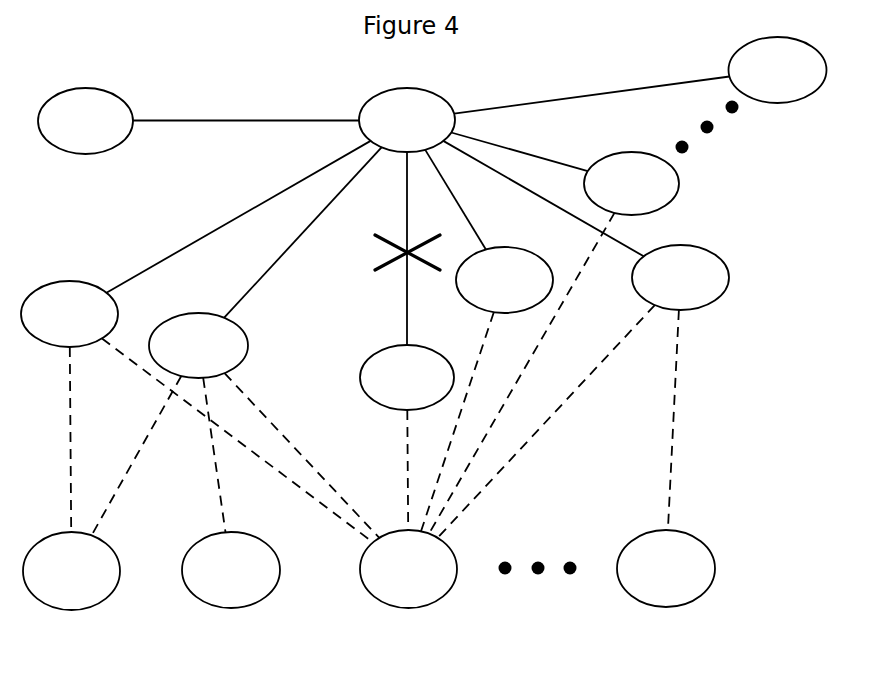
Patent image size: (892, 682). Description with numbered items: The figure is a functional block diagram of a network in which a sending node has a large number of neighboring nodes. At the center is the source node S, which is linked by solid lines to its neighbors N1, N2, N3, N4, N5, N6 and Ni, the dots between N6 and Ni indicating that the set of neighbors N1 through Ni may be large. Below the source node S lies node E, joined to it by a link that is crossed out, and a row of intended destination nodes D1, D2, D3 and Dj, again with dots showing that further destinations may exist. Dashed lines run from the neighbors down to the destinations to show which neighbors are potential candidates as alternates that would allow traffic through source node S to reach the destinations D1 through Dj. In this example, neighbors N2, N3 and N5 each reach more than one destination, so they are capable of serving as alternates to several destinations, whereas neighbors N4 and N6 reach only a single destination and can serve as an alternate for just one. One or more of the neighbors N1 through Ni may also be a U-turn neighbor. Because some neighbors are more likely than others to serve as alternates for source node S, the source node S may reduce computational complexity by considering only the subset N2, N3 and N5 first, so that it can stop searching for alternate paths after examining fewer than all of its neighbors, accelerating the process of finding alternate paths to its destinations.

The neighbor node N1 is at (85, 121).
The source node S is at (407, 120).
The neighbor node Ni is at (778, 70).
The neighbor node N6 is at (631, 183).
The neighbor node N2 is at (69, 314).
The neighbor node N3 is at (198, 345).
The neighbor node N4 is at (504, 280).
The neighbor node N5 is at (680, 277).
The failed/blocked node E is at (407, 377).
The destination node D1 is at (71, 571).
The destination node D2 is at (231, 570).
The destination node D3 is at (408, 569).
The destination node Dj is at (666, 568).